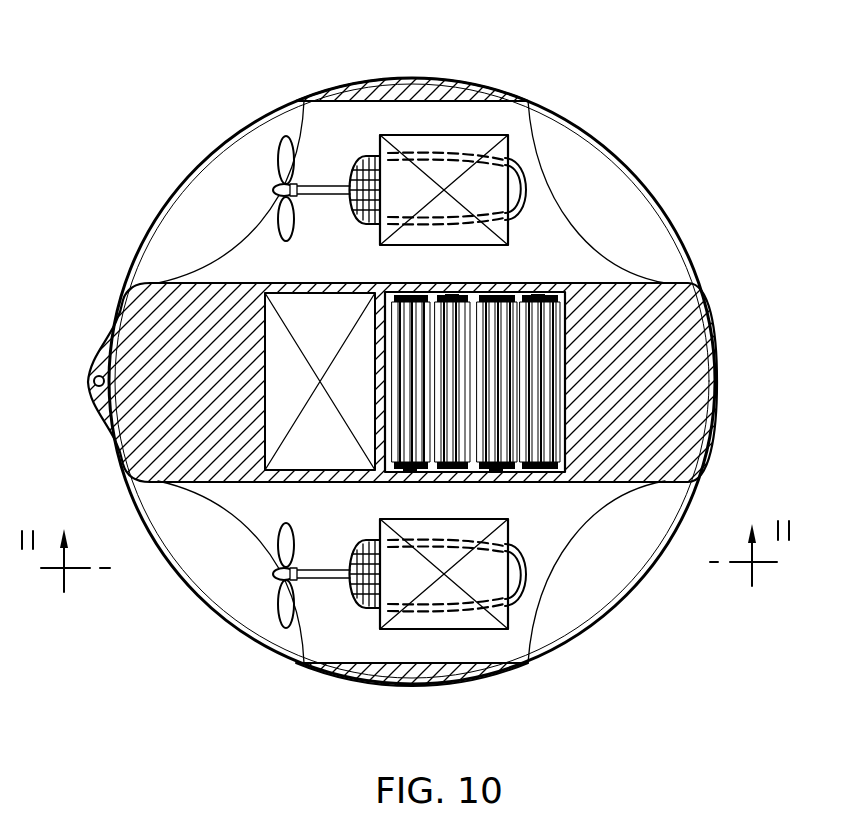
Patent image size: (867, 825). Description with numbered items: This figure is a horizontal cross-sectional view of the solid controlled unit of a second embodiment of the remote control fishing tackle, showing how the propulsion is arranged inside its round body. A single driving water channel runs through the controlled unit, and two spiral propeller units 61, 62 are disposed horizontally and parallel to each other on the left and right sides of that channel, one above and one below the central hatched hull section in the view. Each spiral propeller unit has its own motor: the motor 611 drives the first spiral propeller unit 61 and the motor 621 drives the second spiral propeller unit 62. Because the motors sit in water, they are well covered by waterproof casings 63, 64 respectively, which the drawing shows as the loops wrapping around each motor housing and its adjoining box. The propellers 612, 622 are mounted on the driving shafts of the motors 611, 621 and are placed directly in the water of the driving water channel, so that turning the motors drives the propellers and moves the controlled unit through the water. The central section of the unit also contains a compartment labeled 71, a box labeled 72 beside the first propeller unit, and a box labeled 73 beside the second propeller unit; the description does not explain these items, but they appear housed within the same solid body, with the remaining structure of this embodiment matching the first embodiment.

The spiral propeller unit 61 is at (340, 128).
The motor 611 is at (374, 157).
The propeller 612 is at (283, 160).
The spiral propeller unit 62 is at (308, 620).
The motor 621 is at (371, 609).
The propeller 622 is at (281, 603).
The waterproof casing 63 is at (522, 172).
The waterproof casing 64 is at (528, 563).
The batteries 71 is at (545, 315).
The first control box 72 is at (458, 135).
The second control box 73 is at (483, 630).